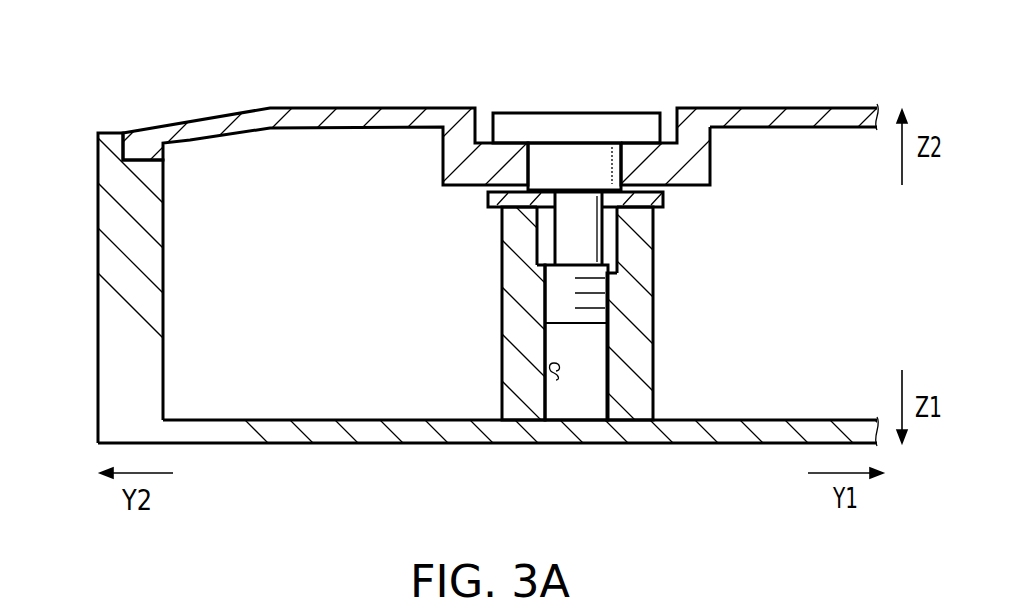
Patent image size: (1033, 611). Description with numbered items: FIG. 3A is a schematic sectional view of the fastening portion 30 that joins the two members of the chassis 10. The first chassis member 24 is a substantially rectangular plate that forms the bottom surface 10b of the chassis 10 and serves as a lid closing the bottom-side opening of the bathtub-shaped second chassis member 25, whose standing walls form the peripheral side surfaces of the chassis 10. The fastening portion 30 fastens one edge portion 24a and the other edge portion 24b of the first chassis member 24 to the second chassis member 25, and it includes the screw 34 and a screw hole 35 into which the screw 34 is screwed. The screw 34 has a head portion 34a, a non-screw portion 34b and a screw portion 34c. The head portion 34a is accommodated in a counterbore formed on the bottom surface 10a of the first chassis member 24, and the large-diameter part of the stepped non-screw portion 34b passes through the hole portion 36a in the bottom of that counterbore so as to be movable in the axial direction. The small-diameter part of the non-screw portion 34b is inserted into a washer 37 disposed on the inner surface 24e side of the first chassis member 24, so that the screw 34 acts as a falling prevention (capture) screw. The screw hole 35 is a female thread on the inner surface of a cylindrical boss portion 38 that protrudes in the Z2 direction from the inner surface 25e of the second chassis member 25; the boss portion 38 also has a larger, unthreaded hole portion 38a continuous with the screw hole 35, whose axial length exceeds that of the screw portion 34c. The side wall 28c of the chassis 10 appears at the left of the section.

The chassis 10 is at (83, 40).
The bottom surface 10a is at (760, 108).
The bottom surface 10b is at (357, 445).
The first chassis member 24 is at (840, 98).
The edge portion 24a is at (402, 98).
The edge portion 24b is at (295, 113).
The inner surface 24e is at (803, 128).
The second chassis member 25 is at (763, 455).
The inner surface 25e is at (733, 420).
The side wall 28c is at (125, 314).
The fastening portion 30 is at (670, 51).
The screw 34 is at (495, 98).
The head portion 34a is at (540, 128).
The non-screw portion 34b is at (570, 215).
The screw portion 34c is at (563, 297).
The screw hole 35 is at (556, 371).
The hole portion 36a is at (613, 164).
The washer 37 is at (665, 198).
The boss portion 38 is at (522, 333).
The hole portion 38a is at (612, 246).